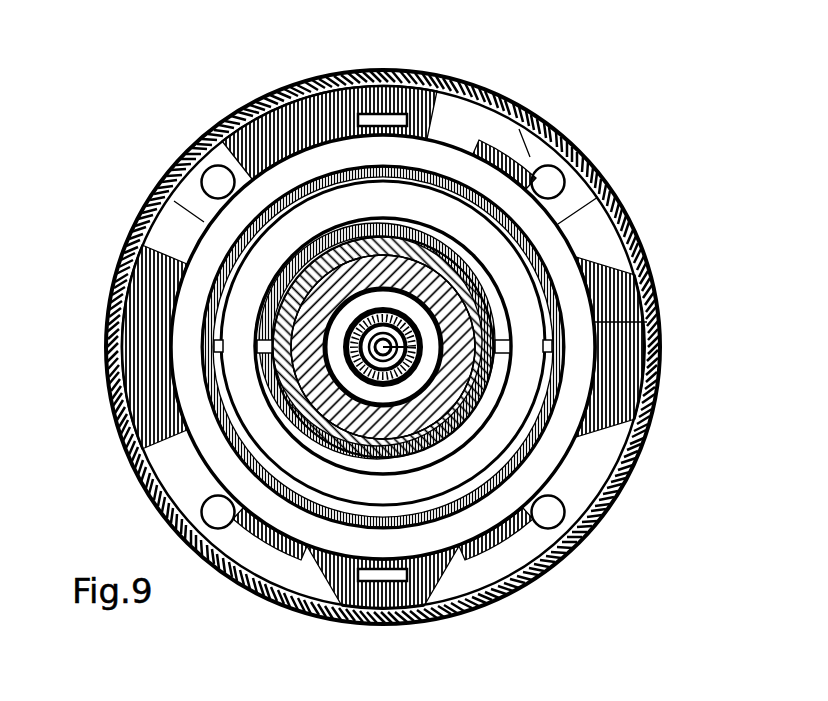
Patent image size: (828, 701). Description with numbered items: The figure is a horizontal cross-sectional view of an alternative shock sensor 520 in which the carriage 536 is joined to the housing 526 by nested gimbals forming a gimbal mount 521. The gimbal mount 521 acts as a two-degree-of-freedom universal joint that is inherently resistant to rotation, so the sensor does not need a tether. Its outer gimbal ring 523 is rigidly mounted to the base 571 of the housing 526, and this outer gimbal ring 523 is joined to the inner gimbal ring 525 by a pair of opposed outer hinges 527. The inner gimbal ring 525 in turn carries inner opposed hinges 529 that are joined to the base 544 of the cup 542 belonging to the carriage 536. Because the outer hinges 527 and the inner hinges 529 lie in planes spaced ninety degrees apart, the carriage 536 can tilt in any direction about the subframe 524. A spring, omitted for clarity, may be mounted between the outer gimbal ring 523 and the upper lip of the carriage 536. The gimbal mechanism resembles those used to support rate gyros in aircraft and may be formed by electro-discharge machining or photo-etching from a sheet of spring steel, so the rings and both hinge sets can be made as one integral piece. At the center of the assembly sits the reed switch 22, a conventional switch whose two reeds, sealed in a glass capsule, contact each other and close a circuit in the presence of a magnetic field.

The shock sensor 520 is at (194, 92).
The gimbal mount 521 is at (647, 319).
The housing 526 is at (484, 128).
The base 571 is at (191, 241).
The outer gimbal ring 523 is at (590, 293).
The inner gimbal ring 525 is at (535, 406).
The outer hinges 527 is at (355, 165).
The cup 542 is at (425, 232).
The base of the cup 544 is at (492, 297).
The inner hinges 529 is at (506, 352).
The subframe 524 is at (280, 383).
The carriage 536 is at (283, 305).
The reed switch 22 is at (377, 369).